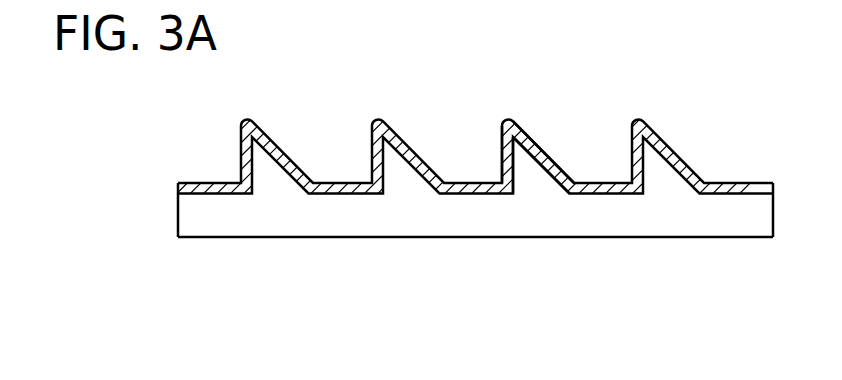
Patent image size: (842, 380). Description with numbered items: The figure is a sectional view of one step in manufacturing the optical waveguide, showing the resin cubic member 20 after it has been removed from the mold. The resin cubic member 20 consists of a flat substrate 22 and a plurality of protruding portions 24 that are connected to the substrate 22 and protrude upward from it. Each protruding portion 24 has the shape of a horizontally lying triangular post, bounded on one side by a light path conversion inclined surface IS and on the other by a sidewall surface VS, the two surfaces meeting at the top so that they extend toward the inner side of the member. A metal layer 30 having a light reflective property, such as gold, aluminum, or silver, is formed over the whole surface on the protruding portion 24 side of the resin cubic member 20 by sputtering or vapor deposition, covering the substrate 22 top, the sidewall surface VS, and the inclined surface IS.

The resin cubic member 20 is at (431, 215).
The substrate 22 is at (516, 222).
The protruding portion 24 is at (523, 163).
The metal layer 30 is at (521, 133).
The sidewall surface VS is at (511, 156).
The light path conversion inclined surface IS is at (537, 145).